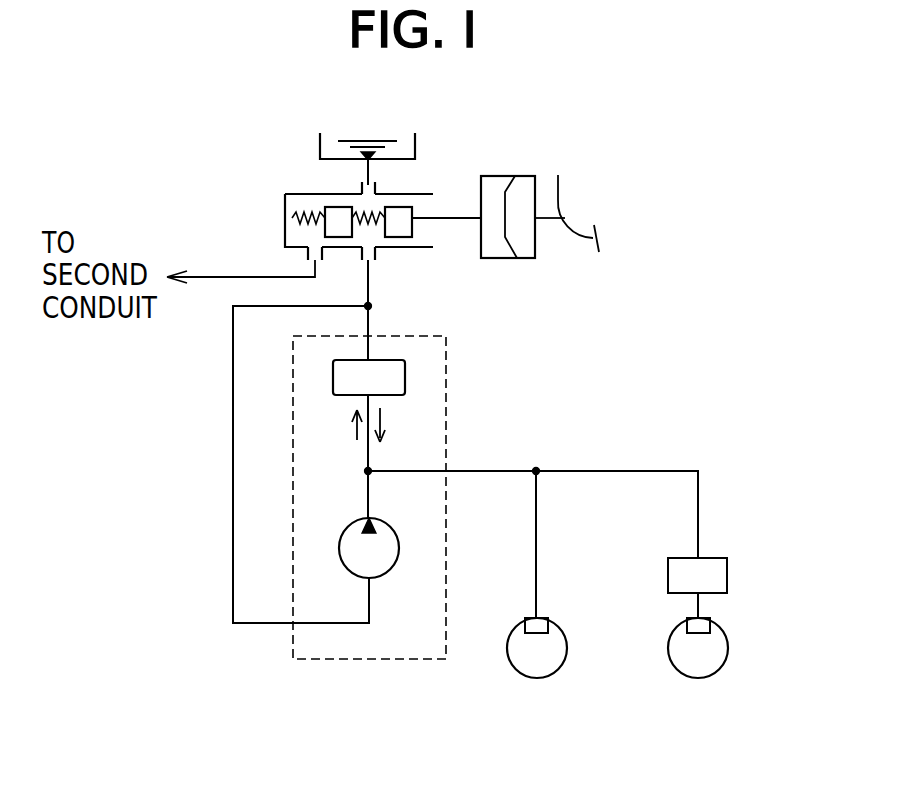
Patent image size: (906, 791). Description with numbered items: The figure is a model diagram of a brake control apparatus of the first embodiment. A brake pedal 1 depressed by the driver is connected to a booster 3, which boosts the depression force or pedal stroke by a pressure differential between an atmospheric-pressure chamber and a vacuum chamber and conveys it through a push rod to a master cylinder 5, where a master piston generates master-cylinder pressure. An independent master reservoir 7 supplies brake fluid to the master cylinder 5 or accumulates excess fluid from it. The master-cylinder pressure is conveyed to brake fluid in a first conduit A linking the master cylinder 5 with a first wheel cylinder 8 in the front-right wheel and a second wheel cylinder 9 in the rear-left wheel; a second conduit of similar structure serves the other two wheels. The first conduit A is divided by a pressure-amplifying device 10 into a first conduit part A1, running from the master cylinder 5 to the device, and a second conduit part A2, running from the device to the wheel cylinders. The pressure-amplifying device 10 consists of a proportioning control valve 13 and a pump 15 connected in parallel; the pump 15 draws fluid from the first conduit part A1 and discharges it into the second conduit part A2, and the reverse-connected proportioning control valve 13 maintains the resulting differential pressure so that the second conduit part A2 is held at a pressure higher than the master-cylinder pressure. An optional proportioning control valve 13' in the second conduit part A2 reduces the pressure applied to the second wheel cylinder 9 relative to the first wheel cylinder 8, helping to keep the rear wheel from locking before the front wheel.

The brake pedal 1 is at (560, 200).
The booster 3 is at (503, 173).
The master cylinder 5 is at (285, 218).
The master reservoir 7 is at (320, 147).
The first wheel cylinder 8 is at (542, 622).
The second wheel cylinder 9 is at (710, 622).
The pressure-amplifying device 10 is at (447, 348).
The proportioning control valve 13 is at (404, 415).
The proportioning control valve 13' is at (732, 573).
The pump 15 is at (388, 531).
The first conduit A is at (371, 283).
The first conduit part A1 is at (370, 317).
The second conduit part A2 is at (623, 470).